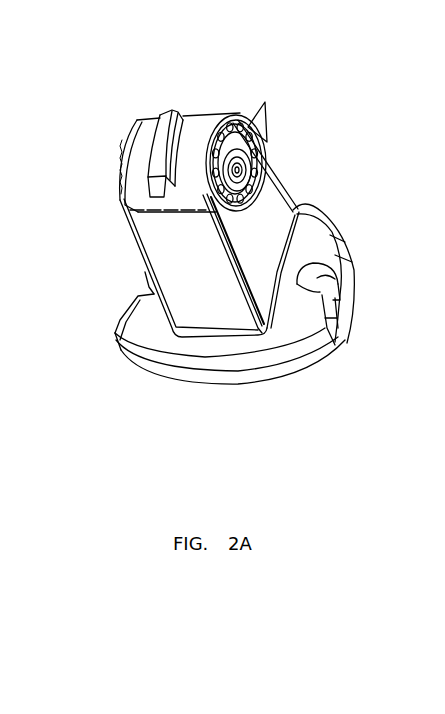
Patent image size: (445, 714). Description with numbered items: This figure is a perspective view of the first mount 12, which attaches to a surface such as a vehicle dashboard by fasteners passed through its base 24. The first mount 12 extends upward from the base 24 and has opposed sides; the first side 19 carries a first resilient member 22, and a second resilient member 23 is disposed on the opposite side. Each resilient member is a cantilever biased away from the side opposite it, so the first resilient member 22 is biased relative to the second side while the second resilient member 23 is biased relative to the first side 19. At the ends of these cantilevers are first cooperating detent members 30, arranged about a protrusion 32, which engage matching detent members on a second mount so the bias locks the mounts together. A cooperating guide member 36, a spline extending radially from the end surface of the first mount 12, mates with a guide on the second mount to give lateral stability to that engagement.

The first mount 12 is at (334, 107).
The first side 19 is at (274, 219).
The first resilient member 22 is at (272, 258).
The second resilient member 23 is at (118, 207).
The base 24 is at (314, 243).
The first cooperating detent members 30 is at (233, 136).
The protrusion 32 is at (251, 167).
The cooperating guide member 36 is at (165, 110).